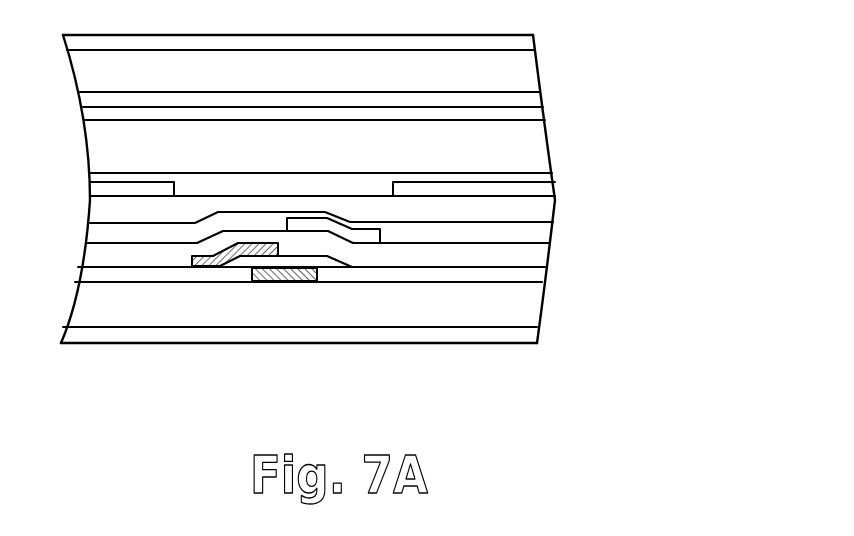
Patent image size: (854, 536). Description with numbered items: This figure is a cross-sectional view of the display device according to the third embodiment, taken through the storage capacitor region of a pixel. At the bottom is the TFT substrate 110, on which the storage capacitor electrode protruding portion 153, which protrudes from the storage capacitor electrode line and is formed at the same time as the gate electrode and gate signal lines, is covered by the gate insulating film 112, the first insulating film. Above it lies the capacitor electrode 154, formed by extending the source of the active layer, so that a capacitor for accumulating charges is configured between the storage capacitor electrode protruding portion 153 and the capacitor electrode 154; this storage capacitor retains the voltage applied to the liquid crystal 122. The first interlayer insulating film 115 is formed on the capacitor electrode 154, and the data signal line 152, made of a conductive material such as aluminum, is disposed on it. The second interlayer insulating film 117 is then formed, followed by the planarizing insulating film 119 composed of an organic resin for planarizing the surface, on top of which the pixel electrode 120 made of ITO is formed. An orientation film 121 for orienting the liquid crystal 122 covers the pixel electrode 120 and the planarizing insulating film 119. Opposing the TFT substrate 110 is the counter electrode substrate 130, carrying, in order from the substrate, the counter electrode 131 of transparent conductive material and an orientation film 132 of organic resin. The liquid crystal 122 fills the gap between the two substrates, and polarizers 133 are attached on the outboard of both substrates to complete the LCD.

The polarizer 133 is at (528, 47).
The counter electrode substrate 130 is at (528, 73).
The counter electrode 131 is at (532, 100).
The orientation film 132 is at (537, 117).
The liquid crystal 122 is at (537, 155).
The orientation film 121 is at (540, 180).
The pixel electrode 120 is at (135, 192).
The planarizing insulating film 119 is at (537, 213).
The second interlayer insulating film 117 is at (537, 233).
The first interlayer insulating film 115 is at (537, 258).
The gate insulating film 112 is at (528, 277).
The TFT substrate 110 is at (527, 303).
The capacitor electrode 154 is at (217, 266).
The storage capacitor electrode protruding portion 153 is at (297, 271).
The data signal line 152 is at (367, 234).